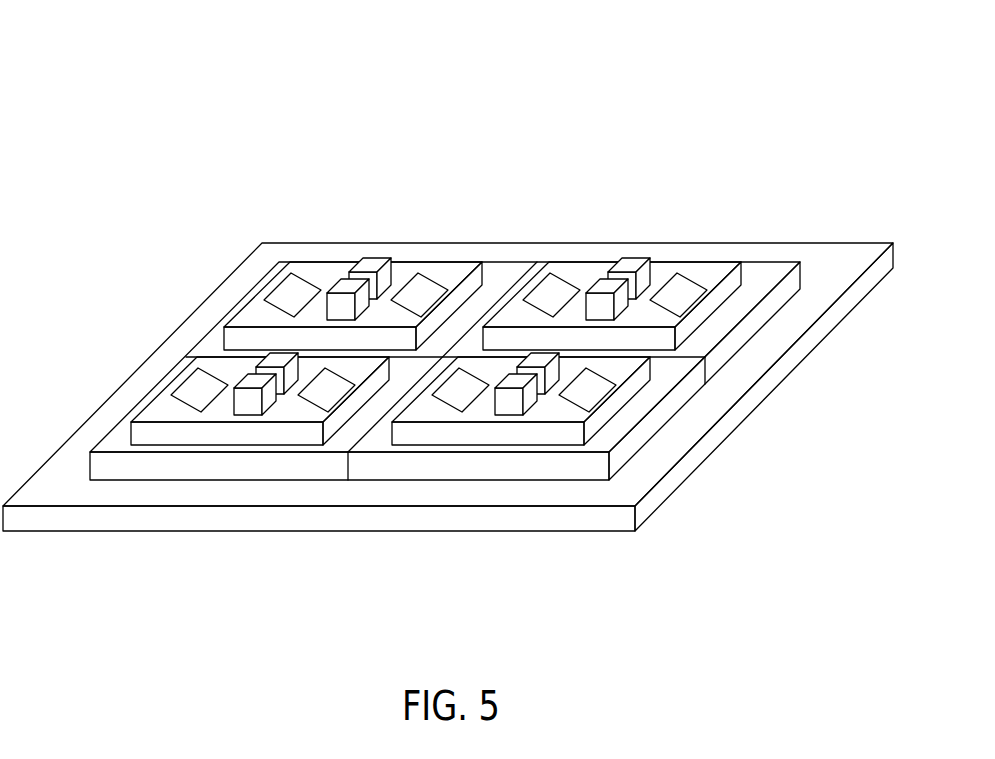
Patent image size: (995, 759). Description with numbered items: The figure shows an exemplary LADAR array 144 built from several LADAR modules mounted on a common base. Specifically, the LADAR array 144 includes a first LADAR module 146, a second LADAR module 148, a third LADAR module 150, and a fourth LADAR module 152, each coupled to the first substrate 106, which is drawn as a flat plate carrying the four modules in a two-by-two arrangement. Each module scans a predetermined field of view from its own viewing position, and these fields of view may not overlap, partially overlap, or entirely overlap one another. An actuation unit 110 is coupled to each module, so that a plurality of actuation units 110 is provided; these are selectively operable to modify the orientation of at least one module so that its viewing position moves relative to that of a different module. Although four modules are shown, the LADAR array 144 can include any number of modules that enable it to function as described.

The first substrate 106 is at (648, 503).
The actuation unit 110 is at (503, 273).
The LADAR array 144 is at (448, 316).
The first LADAR module 146 is at (323, 247).
The second LADAR module 148 is at (682, 250).
The third LADAR module 150 is at (152, 490).
The fourth LADAR module 152 is at (537, 490).